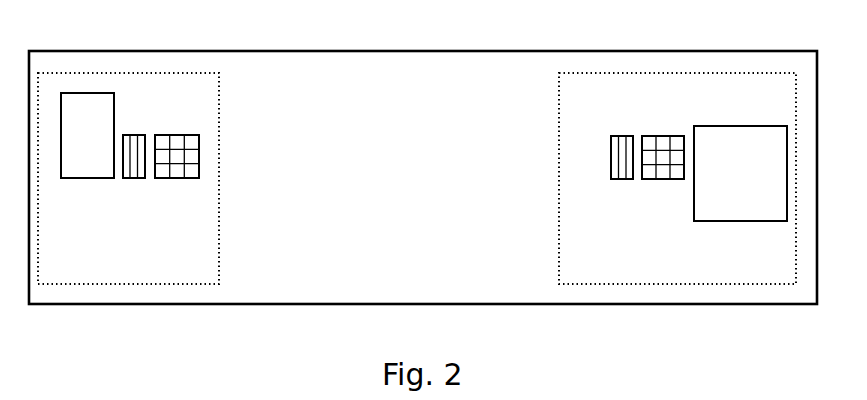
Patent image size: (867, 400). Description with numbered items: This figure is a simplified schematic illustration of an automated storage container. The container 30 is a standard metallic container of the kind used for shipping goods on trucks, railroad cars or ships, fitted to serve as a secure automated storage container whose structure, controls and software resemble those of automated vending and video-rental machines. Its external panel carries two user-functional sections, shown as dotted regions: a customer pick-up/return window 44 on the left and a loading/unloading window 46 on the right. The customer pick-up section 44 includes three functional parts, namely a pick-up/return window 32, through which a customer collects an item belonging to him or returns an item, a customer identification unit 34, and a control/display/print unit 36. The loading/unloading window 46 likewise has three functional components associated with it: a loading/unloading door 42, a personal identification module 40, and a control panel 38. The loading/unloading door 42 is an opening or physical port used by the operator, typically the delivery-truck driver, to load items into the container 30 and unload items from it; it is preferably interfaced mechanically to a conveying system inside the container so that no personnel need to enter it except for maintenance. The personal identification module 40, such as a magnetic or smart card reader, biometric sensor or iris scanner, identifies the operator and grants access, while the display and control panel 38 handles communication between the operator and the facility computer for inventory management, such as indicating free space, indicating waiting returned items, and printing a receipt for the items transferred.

The container 30 is at (200, 51).
The pick-up/return window 32 is at (61, 140).
The customer identification unit 34 is at (125, 178).
The control/display/print unit 36 is at (164, 178).
The control panel 38 is at (611, 149).
The personal identification module 40 is at (651, 179).
The loading/unloading door 42 is at (710, 221).
The customer pick-up/return window 44 is at (219, 105).
The loading/unloading window 46 is at (559, 180).